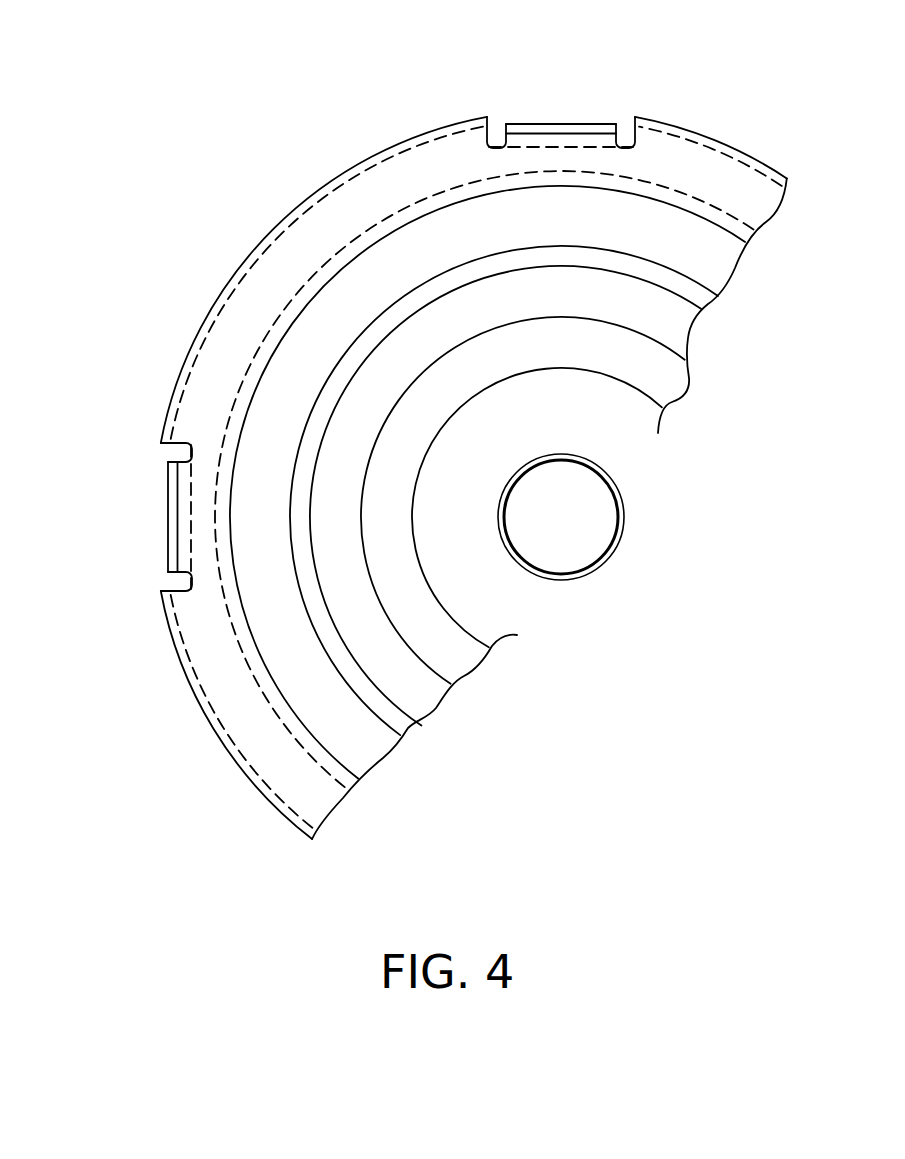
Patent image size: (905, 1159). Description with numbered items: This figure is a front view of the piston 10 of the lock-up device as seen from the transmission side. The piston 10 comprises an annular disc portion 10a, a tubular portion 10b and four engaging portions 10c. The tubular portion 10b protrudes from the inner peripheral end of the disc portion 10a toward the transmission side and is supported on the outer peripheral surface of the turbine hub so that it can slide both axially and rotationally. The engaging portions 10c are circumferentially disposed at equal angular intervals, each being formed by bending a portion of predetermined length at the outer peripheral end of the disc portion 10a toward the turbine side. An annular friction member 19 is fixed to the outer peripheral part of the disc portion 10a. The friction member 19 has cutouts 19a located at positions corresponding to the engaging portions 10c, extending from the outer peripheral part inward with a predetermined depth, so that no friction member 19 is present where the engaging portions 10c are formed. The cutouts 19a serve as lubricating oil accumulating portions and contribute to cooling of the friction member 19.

The piston 10 is at (296, 92).
The annular disc portion 10a is at (672, 318).
The tubular portion 10b is at (618, 493).
The engaging portions 10c is at (530, 124).
The annular friction member 19 is at (443, 150).
The cutouts 19a is at (607, 148).